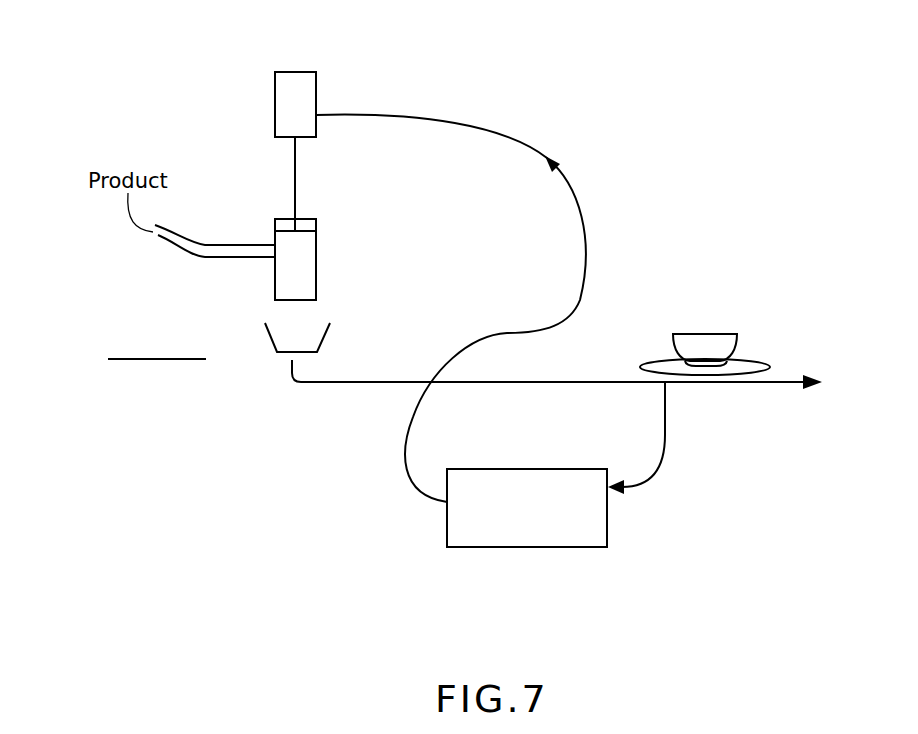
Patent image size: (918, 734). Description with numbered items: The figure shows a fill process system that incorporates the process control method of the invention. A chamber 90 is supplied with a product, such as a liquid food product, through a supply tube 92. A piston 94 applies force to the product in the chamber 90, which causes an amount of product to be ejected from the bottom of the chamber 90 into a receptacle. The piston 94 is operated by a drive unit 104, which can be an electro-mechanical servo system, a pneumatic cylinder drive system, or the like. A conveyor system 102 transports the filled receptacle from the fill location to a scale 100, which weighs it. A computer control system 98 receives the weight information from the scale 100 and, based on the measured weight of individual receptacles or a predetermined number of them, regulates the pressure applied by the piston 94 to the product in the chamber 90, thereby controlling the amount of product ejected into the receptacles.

The chamber 90 is at (298, 275).
The supply tube 92 is at (220, 257).
The piston 94 is at (298, 226).
The computer control system 98 is at (577, 547).
The scale 100 is at (714, 372).
The conveyor system 102 is at (135, 360).
The drive unit 104 is at (316, 103).